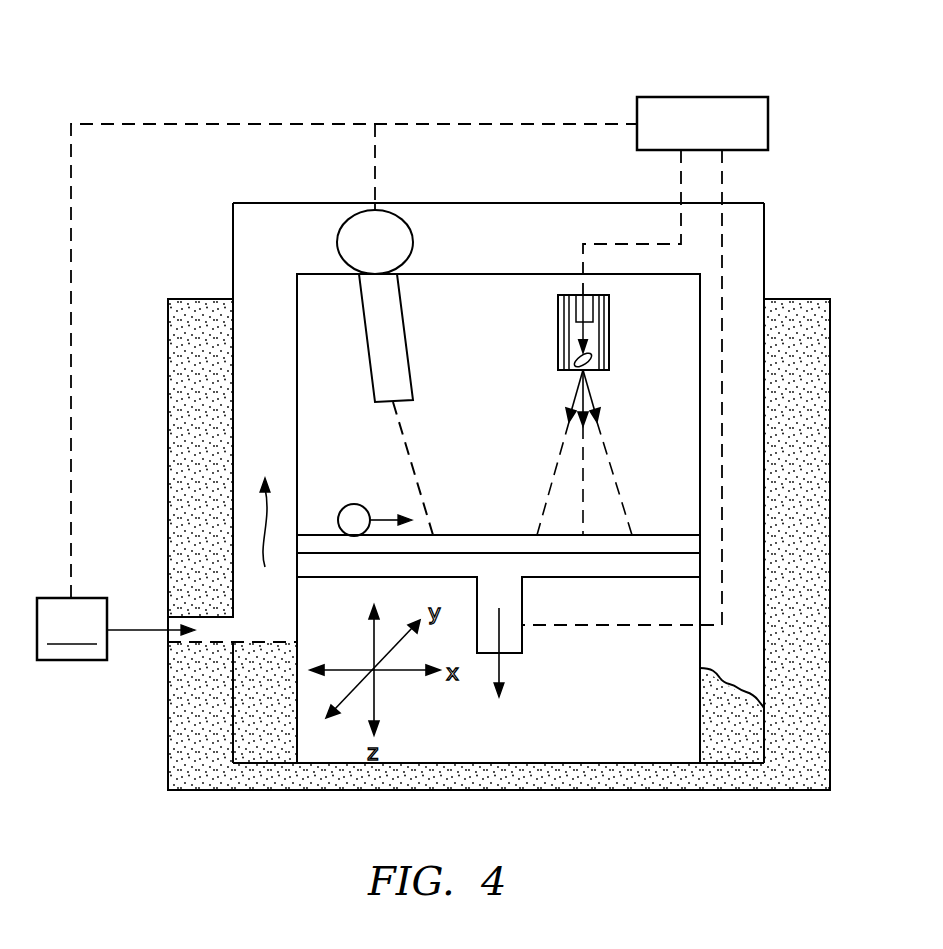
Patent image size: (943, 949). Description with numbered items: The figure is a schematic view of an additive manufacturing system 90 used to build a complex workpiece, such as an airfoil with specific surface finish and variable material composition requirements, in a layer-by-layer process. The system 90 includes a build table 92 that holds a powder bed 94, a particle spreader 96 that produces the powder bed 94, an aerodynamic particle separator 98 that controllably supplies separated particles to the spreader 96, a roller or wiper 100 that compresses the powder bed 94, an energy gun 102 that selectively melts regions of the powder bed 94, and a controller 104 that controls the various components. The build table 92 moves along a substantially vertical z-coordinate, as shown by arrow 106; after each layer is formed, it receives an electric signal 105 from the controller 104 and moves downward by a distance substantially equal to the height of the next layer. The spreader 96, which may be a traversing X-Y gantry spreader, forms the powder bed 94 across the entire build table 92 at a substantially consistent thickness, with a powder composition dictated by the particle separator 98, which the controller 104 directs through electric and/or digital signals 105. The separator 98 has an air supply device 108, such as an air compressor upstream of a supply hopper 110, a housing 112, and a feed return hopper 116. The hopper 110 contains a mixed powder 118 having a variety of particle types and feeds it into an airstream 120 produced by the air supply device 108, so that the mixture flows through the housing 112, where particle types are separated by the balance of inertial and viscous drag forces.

The additive manufacturing system 90 is at (575, 97).
The build table 92 is at (587, 566).
The powder bed 94 is at (664, 546).
The particle spreader 96 is at (393, 343).
The aerodynamic particle separator 98 is at (332, 178).
The roller or wiper 100 is at (352, 512).
The energy gun 102 is at (610, 311).
The controller 104 is at (707, 97).
The electric signal 105 is at (188, 122).
The arrow 106 is at (500, 663).
The air supply device 108 is at (72, 629).
The supply hopper 110 is at (183, 545).
The housing 112 is at (263, 538).
The feed return hopper 116 is at (757, 666).
The mixed powder 118 is at (183, 481).
The airstream 120 is at (127, 633).